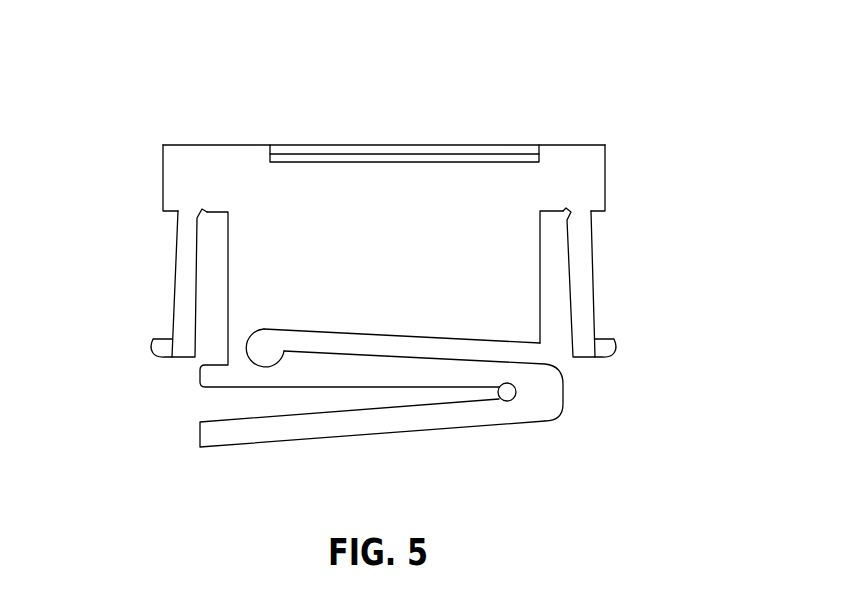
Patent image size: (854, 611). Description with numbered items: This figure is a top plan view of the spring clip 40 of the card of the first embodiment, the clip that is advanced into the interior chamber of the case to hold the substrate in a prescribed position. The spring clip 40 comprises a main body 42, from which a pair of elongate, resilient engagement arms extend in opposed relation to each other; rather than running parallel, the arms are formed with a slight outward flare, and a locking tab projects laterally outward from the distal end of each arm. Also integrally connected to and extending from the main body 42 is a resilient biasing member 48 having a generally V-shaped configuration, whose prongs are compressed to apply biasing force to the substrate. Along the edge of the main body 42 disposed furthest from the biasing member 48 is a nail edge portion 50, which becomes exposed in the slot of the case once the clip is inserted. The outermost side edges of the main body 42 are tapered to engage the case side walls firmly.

The spring clip 40 is at (631, 106).
The main body 42 is at (325, 175).
The biasing member 48 is at (445, 422).
The nail edge portion 50 is at (421, 155).